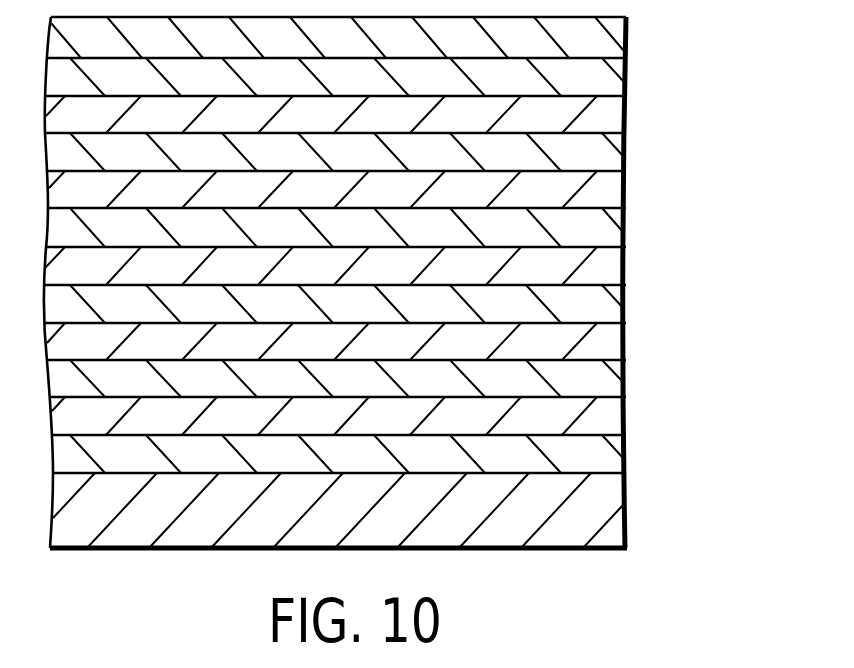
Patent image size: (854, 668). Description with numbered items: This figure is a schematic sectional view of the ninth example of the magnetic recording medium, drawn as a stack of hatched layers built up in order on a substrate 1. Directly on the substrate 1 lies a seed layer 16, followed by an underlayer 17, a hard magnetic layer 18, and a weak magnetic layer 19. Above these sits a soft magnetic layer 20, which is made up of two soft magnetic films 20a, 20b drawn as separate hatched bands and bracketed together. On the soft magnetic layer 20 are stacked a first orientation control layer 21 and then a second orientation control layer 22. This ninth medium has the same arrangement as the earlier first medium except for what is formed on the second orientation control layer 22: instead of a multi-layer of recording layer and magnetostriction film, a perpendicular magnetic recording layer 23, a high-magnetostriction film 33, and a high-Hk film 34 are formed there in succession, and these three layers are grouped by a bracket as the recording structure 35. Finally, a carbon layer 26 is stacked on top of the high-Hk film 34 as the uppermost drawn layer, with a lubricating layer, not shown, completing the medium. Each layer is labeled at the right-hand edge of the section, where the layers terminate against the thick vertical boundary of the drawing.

The substrate 1 is at (605, 514).
The seed layer 16 is at (605, 455).
The underlayer 17 is at (605, 417).
The hard magnetic layer 18 is at (605, 380).
The weak magnetic layer 19 is at (605, 343).
The soft magnetic layer 20 is at (406, 284).
The soft magnetic film 20a is at (605, 305).
The soft magnetic film 20b is at (605, 267).
The first orientation control layer 21 is at (605, 229).
The second orientation control layer 22 is at (605, 190).
The perpendicular magnetic recording layer 23 is at (367, 152).
The high-magnetostriction film 33 is at (605, 114).
The high-Hk film 34 is at (605, 75).
The stacked recording structure 35 is at (404, 113).
The carbon layer 26 is at (605, 40).